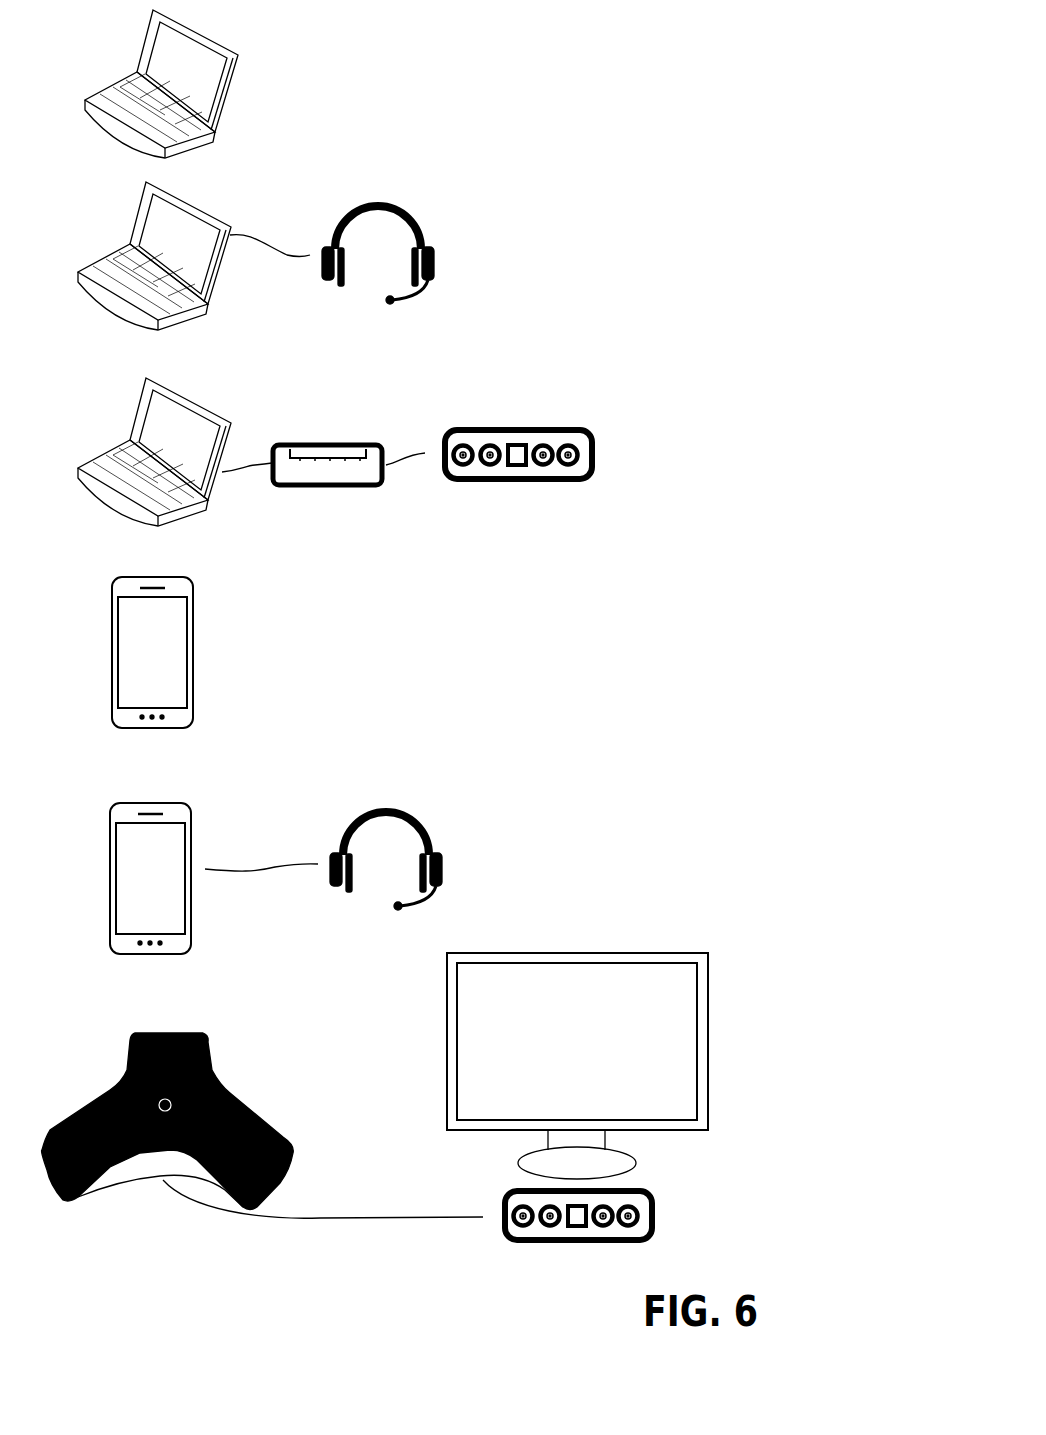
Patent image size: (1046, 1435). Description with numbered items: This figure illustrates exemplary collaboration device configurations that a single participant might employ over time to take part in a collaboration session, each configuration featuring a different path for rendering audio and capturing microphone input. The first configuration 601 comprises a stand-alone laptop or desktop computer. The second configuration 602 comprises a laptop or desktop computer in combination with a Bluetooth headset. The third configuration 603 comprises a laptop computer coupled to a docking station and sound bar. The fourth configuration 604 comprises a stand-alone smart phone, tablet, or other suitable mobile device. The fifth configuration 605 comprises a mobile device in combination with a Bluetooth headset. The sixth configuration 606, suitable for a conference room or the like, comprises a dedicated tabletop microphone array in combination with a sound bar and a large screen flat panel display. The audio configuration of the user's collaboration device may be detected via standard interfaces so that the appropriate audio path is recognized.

The laptop computer 601 is at (345, 100).
The second configuration 602 is at (478, 238).
The third configuration 603 is at (628, 453).
The mobile phone 604 is at (267, 630).
The fifth configuration 605 is at (548, 865).
The conference phone with monitor and speakerphone 606 is at (750, 1032).